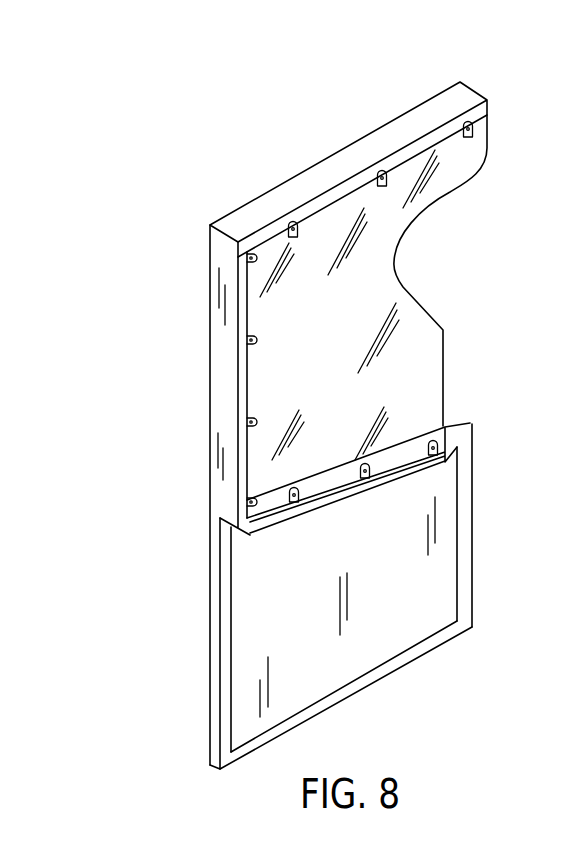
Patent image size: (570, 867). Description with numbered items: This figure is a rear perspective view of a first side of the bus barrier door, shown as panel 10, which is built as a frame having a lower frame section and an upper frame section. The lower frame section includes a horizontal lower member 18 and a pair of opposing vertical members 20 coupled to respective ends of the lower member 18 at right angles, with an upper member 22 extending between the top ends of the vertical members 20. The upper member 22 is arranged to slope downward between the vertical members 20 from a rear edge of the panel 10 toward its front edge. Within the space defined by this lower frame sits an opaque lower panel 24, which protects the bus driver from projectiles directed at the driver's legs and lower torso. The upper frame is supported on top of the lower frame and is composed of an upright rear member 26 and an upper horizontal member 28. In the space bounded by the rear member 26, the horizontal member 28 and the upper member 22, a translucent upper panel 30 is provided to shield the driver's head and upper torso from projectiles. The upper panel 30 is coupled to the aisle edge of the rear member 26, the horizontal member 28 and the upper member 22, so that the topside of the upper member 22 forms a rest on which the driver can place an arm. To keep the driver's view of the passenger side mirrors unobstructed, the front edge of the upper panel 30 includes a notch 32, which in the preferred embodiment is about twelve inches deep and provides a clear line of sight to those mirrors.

The panel 10 is at (141, 492).
The lower member 18 is at (393, 667).
The vertical members 20 is at (468, 537).
The upper member 22 is at (465, 423).
The lower panel 24 is at (338, 590).
The rear member 26 is at (217, 352).
The horizontal member 28 is at (347, 152).
The upper panel 30 is at (330, 345).
The notch 32 is at (447, 257).